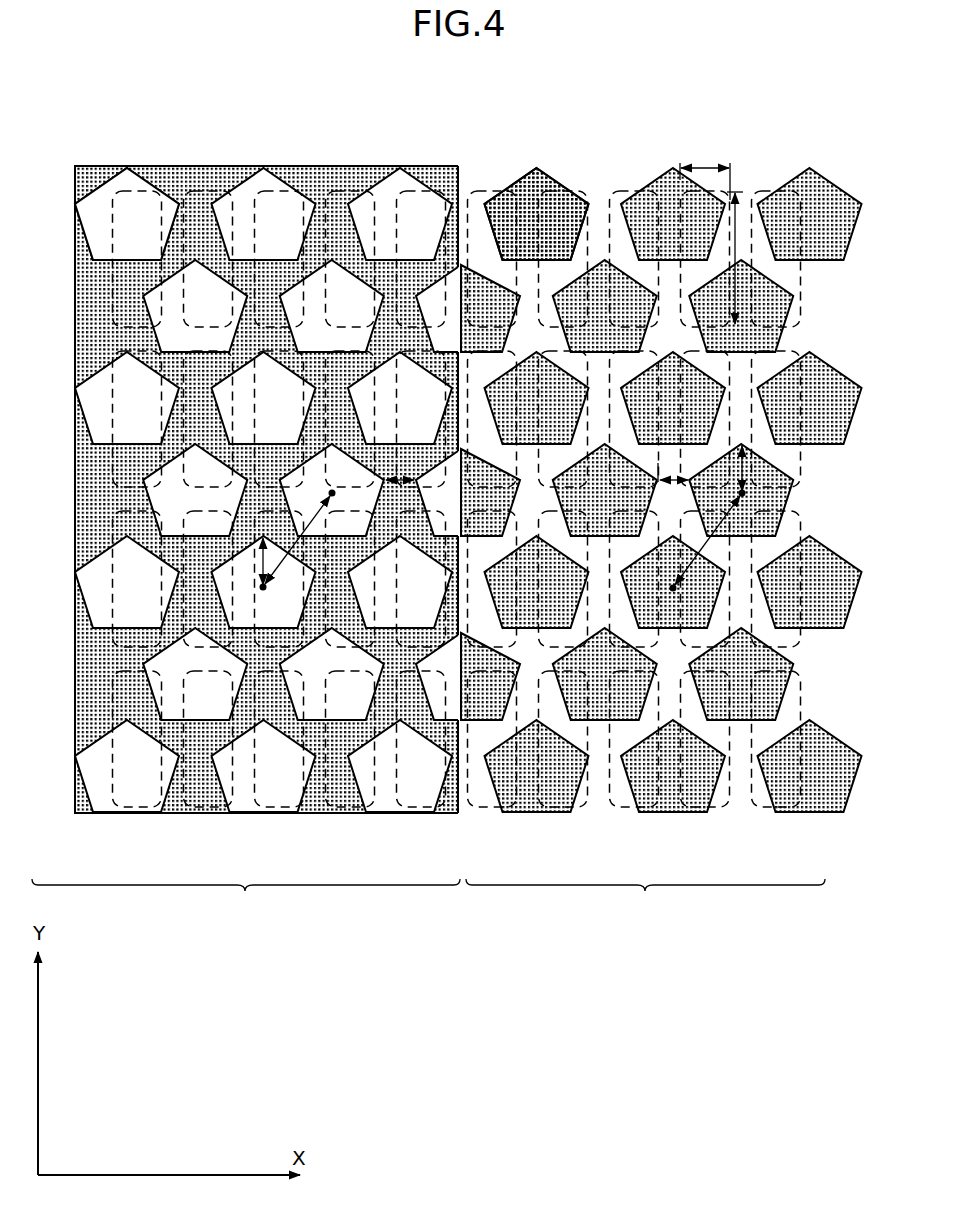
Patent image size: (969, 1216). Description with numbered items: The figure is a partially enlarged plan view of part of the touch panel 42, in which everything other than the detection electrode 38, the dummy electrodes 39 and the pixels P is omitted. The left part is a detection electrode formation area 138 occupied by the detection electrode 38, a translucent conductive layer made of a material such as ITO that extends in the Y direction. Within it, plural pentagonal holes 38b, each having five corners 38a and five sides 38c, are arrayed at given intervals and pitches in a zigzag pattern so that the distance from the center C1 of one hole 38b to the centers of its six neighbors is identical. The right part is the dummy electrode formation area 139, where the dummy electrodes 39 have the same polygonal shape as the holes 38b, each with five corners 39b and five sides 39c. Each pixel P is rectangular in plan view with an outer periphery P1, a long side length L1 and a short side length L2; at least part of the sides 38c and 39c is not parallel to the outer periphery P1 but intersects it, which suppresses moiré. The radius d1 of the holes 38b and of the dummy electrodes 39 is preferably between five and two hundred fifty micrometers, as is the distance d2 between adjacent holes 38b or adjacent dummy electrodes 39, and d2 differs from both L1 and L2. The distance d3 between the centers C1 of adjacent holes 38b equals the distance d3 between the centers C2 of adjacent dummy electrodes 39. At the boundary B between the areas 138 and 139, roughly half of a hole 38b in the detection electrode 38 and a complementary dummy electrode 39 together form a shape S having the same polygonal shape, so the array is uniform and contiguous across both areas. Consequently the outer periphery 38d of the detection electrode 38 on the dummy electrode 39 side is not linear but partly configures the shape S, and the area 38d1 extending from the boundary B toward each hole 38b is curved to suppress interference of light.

The touch panel 42 is at (835, 122).
The detection electrode 38 is at (203, 182).
The corner 38a is at (188, 210).
The hole 38b is at (100, 203).
The side 38c is at (150, 168).
The outer periphery 38d is at (455, 762).
The area 38d1 is at (452, 718).
The dummy electrode 39 is at (547, 192).
The corner 39b is at (545, 185).
The side 39c is at (567, 193).
The pixel P is at (482, 195).
The outer periphery P1 is at (350, 192).
The length of long sides L1 is at (738, 200).
The length of short sides L2 is at (705, 169).
The radius d1 is at (817, 474).
The distance d2 is at (400, 482).
The distance d3 is at (502, 544).
The center C1 is at (349, 496).
The center C2 is at (759, 496).
The shape S is at (447, 687).
The boundary B is at (460, 818).
The detection electrode formation area 138 is at (246, 900).
The dummy electrode formation area 139 is at (645, 900).